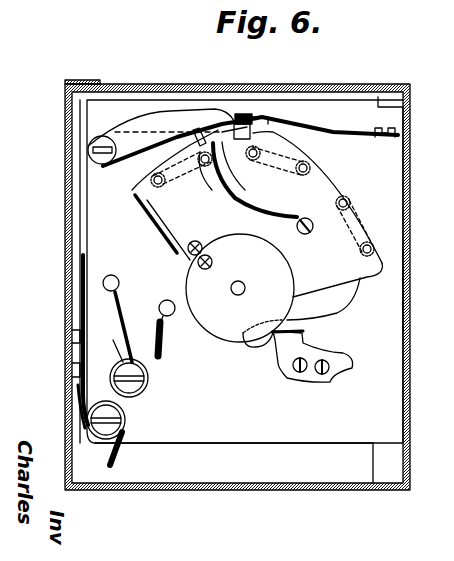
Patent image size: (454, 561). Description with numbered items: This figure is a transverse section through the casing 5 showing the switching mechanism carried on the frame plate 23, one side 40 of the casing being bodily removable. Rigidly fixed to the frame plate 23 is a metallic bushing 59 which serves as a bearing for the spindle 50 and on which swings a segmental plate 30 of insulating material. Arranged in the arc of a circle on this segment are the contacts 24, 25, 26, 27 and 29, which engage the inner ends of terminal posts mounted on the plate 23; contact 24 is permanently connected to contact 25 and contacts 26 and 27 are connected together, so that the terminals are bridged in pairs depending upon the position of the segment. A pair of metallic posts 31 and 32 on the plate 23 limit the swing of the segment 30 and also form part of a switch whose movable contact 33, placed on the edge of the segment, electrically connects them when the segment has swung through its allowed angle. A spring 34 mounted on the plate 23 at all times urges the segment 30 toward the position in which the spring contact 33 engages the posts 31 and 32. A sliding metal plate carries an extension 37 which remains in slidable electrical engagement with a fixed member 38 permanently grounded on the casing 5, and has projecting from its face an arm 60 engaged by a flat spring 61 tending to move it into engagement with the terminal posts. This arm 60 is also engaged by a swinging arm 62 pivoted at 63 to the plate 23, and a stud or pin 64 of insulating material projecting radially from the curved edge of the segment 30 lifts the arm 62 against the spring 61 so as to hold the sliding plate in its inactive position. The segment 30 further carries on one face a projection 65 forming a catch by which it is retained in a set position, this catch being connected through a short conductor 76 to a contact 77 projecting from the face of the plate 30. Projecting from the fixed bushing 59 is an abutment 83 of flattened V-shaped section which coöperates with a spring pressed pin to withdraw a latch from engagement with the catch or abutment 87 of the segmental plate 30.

The casing 5 is at (412, 290).
The frame plate 23 is at (262, 444).
The contact 24 is at (362, 252).
The contact 25 is at (346, 197).
The contact 26 is at (303, 177).
The contact 27 is at (276, 165).
The contact 29 is at (158, 185).
The segmental plate 30 is at (80, 299).
The post 31 is at (117, 280).
The post 32 is at (167, 299).
The movable contact 33 is at (135, 205).
The spring 34 is at (340, 316).
The extension 37 is at (86, 232).
The fixed member 38 is at (208, 184).
The side of casing 40 is at (73, 329).
The spindle 50 is at (246, 288).
The metallic bushing 59 is at (218, 340).
The arm 60 is at (251, 118).
The flat spring 61 is at (313, 128).
The swinging arm 62 is at (186, 109).
The pivot 63 is at (104, 166).
The stud or pin 64 is at (201, 160).
The projection 65 is at (252, 158).
The conductor 76 is at (273, 214).
The contact 77 is at (313, 227).
The abutment 83 is at (213, 262).
The catch or abutment 87 is at (200, 243).